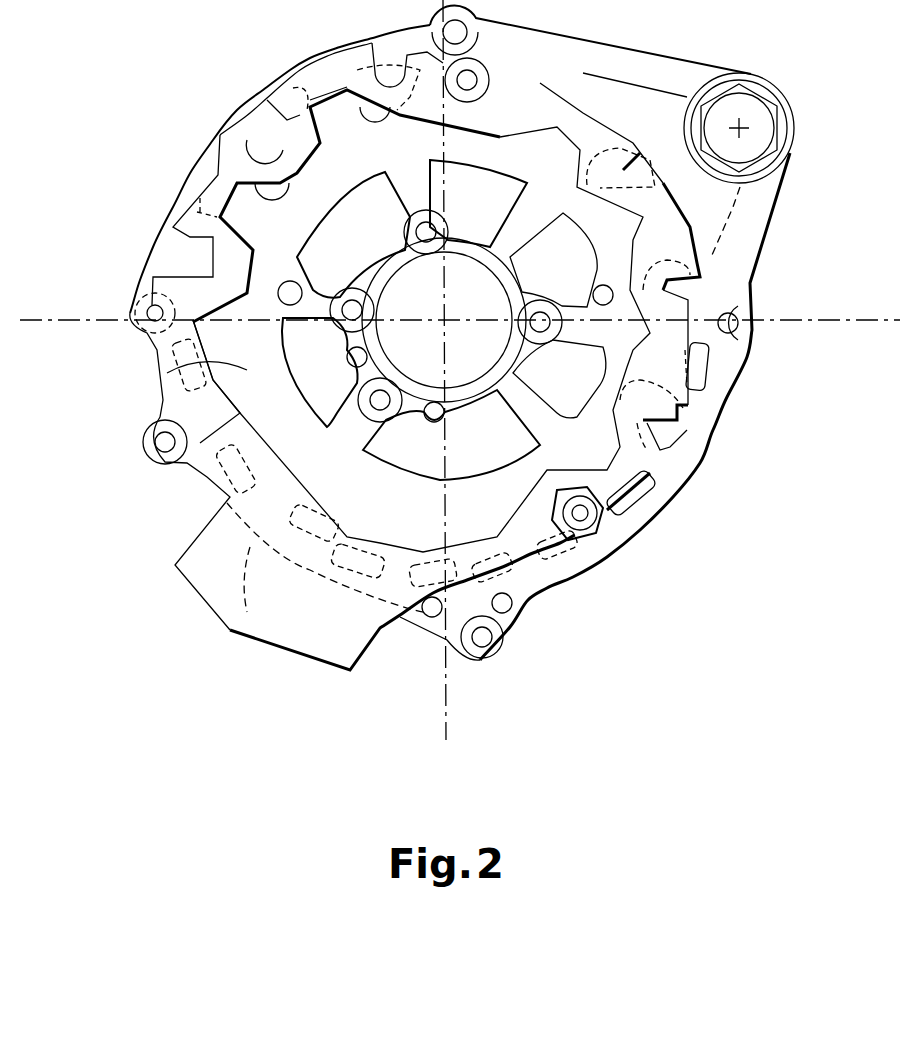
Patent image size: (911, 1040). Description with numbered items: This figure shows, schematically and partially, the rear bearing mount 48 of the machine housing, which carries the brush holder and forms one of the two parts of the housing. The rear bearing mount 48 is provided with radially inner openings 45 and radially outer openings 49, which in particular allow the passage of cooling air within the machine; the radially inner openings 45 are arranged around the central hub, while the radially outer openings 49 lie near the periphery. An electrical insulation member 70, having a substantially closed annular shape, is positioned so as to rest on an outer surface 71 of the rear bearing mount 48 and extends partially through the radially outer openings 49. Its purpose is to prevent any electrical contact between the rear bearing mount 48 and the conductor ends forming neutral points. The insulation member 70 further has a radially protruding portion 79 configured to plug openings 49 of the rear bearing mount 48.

The radially inner openings 45 is at (377, 241).
The rear bearing mount 48 is at (547, 590).
The radially outer openings 49 is at (193, 257).
The electrical insulation member 70 is at (213, 147).
The outer surface 71 is at (190, 363).
The radially protruding portion 79 is at (323, 623).